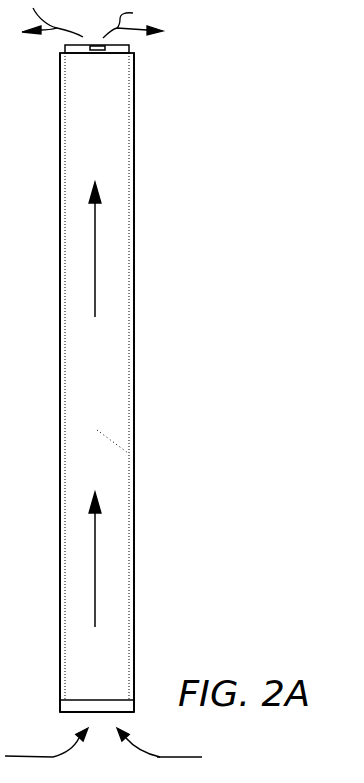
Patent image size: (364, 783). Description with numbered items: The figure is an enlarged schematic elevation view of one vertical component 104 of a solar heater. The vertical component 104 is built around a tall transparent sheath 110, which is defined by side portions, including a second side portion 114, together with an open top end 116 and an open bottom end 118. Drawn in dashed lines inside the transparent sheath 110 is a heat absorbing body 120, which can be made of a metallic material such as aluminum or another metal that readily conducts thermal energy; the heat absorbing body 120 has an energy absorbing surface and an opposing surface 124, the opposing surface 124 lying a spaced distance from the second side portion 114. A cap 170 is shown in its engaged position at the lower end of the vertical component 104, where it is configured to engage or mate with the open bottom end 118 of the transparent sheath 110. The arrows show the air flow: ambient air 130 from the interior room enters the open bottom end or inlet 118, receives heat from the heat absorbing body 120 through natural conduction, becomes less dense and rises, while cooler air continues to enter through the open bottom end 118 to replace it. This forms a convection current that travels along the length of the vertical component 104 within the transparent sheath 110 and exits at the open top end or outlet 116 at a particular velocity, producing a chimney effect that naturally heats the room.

The vertical component 104 is at (174, 166).
The transparent sheath 110 is at (135, 233).
The heat absorbing body 120 is at (130, 302).
The second side portion 114 is at (105, 355).
The opposing surface 124 is at (135, 453).
The open top end 116 is at (113, 54).
The open bottom end 118 is at (123, 712).
The cap 170 is at (83, 700).
The ambient air 130 is at (53, 757).